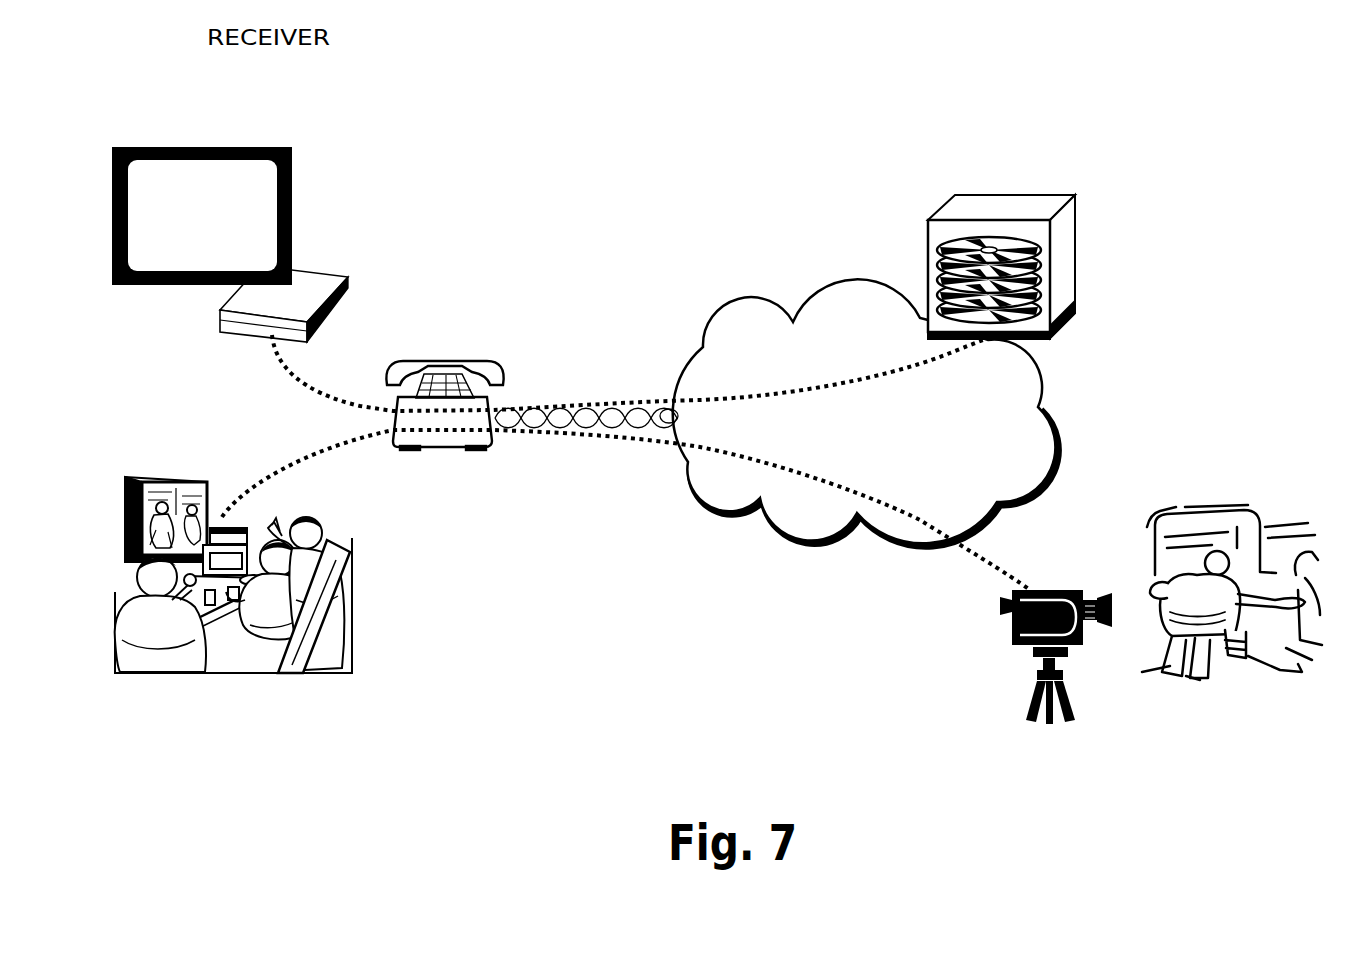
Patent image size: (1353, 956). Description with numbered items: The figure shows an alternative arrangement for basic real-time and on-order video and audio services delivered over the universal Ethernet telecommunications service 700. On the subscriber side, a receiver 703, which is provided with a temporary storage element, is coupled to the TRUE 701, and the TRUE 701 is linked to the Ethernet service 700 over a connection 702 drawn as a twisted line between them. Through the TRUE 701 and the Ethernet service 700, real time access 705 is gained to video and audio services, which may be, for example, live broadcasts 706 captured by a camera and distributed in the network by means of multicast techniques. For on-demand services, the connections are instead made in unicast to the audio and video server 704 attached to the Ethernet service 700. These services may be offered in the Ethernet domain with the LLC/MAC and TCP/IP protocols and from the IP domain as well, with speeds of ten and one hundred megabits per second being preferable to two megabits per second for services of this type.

The universal Ethernet telecommunications service 700 is at (866, 412).
The TRUE 701 is at (444, 325).
The twisted pair line 702 is at (589, 373).
The receiver 703 is at (333, 165).
The audio and video server 704 is at (1014, 158).
The real time access 705 is at (372, 597).
The live broadcasts 706 is at (955, 667).